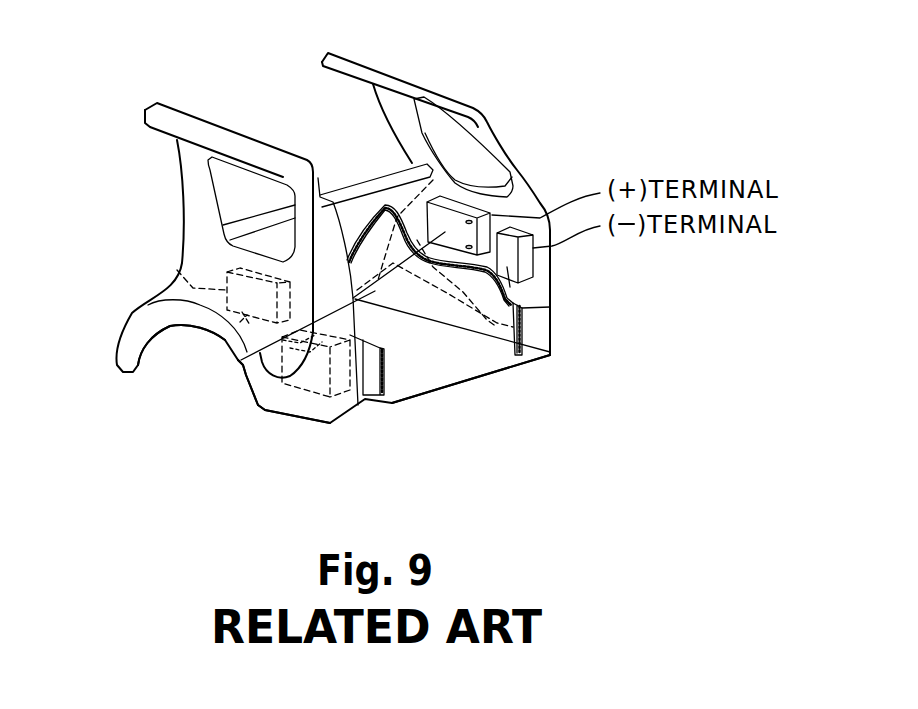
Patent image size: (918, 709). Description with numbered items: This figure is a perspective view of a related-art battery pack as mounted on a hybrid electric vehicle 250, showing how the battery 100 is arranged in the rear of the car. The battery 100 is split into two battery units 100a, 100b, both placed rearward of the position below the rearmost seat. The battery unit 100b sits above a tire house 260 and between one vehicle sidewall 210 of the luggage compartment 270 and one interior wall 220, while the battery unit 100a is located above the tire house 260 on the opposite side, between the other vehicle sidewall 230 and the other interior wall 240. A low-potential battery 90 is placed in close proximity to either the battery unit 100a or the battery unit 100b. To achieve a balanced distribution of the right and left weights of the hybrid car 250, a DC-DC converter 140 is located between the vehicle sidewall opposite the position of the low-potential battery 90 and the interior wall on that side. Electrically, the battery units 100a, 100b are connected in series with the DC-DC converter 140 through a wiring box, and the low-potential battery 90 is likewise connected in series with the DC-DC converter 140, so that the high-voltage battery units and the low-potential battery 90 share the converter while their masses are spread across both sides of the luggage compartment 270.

The low-potential battery 90 is at (352, 413).
The battery 100 is at (108, 397).
The battery unit 100a is at (212, 345).
The battery unit 100b is at (236, 357).
The DC-DC converter 140 is at (515, 305).
The vehicle sidewall 210 is at (442, 193).
The interior wall 220 is at (550, 322).
The vehicle sidewall 230 is at (260, 407).
The interior wall 240 is at (387, 372).
The hybrid electric vehicle 250 is at (418, 80).
The tire house 260 is at (177, 270).
The luggage compartment 270 is at (450, 358).